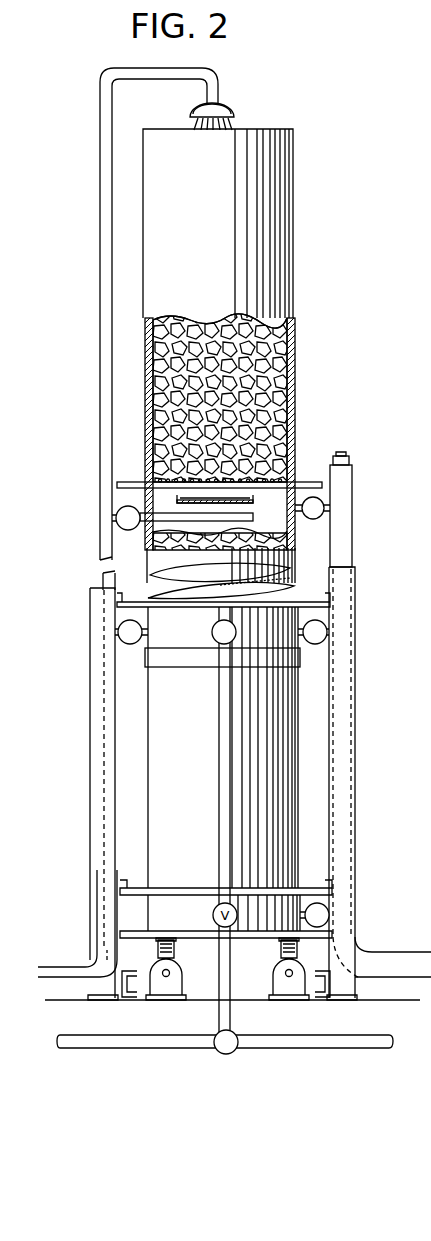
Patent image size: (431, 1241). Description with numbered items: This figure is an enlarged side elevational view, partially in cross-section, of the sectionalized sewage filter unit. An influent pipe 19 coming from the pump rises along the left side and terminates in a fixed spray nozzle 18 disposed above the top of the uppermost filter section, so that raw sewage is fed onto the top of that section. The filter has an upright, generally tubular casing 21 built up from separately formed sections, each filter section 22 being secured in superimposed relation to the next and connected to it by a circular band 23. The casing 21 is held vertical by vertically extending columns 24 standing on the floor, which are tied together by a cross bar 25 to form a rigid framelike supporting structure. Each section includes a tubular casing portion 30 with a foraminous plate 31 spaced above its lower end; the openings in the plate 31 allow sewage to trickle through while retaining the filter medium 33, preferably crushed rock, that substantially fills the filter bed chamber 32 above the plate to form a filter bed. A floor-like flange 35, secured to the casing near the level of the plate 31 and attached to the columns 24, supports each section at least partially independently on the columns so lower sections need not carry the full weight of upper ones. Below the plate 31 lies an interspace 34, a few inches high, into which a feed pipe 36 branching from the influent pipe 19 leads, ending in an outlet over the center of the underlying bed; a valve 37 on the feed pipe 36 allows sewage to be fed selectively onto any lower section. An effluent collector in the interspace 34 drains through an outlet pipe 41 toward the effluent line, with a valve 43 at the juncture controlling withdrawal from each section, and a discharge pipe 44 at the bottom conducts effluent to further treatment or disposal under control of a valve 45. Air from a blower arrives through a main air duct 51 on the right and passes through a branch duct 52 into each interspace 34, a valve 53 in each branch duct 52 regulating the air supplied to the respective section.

The spray nozzle 18 is at (232, 110).
The influent pipe 19 is at (100, 359).
The casing 21 is at (298, 254).
The filter section 22 is at (298, 791).
The circular band 23 is at (191, 661).
The columns 24 is at (344, 724).
The cross bar 25 is at (118, 970).
The tubular casing portion 30 is at (291, 197).
The foraminous plate 31 is at (295, 468).
The filter bed chamber 32 is at (295, 325).
The filter medium 33 is at (285, 390).
The interspace 34 is at (268, 512).
The flange 35 is at (118, 484).
The feed pipe 36 is at (140, 521).
The valve 37 is at (121, 641).
The outlet pipe 41 is at (218, 788).
The valve 43 is at (212, 632).
The discharge pipe 44 is at (357, 1046).
The valve 45 is at (233, 1052).
The main air duct 51 is at (346, 512).
The branch duct 52 is at (305, 613).
The valve 53 is at (322, 641).